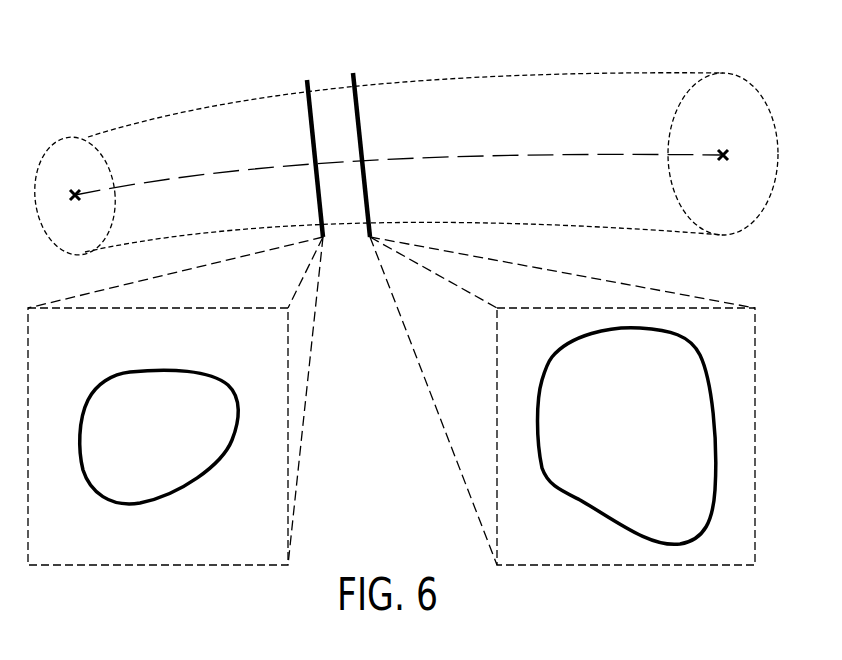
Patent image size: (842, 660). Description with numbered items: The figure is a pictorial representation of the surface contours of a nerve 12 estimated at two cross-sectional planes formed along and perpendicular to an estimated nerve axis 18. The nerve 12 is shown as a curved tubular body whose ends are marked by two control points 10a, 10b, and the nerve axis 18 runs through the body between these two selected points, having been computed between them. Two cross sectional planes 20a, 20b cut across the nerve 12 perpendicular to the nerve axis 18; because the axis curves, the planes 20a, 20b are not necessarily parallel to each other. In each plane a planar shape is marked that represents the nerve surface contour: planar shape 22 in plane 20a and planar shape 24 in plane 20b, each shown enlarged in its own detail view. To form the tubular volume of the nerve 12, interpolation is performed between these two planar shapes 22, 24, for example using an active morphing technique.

The nerve 12 is at (88, 103).
The control point 10a is at (74, 182).
The control point 10b is at (728, 142).
The nerve axis 18 is at (227, 174).
The cross sectional plane 20a is at (305, 68).
The cross sectional plane 20b is at (358, 60).
The planar shape 22 is at (184, 363).
The planar shape 24 is at (546, 347).